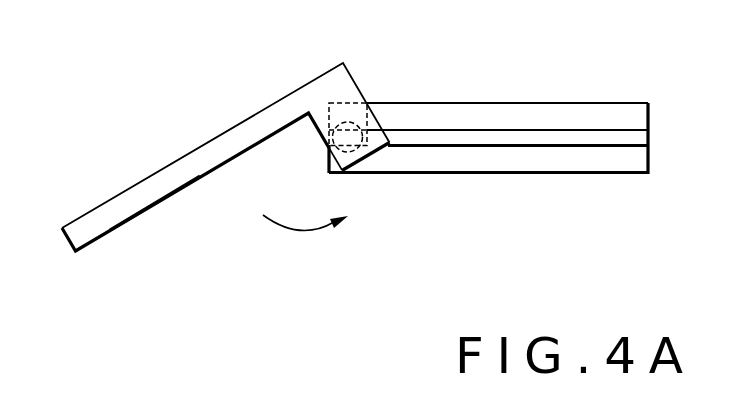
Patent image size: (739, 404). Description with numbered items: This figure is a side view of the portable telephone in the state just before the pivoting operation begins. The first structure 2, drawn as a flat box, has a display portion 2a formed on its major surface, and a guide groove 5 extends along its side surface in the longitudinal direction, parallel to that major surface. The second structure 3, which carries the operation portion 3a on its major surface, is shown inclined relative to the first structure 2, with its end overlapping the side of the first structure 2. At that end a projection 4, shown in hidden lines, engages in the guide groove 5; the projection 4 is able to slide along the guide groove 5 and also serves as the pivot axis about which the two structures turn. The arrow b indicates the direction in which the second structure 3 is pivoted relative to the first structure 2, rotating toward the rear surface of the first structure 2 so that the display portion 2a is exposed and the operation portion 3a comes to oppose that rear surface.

The first structure 2 is at (455, 174).
The display portion 2a is at (524, 88).
The second structure 3 is at (146, 178).
The operation portion 3a is at (155, 221).
The projection 4 is at (352, 102).
The guide groove 5 is at (626, 153).
The arrow indicating pivoting direction b is at (302, 232).